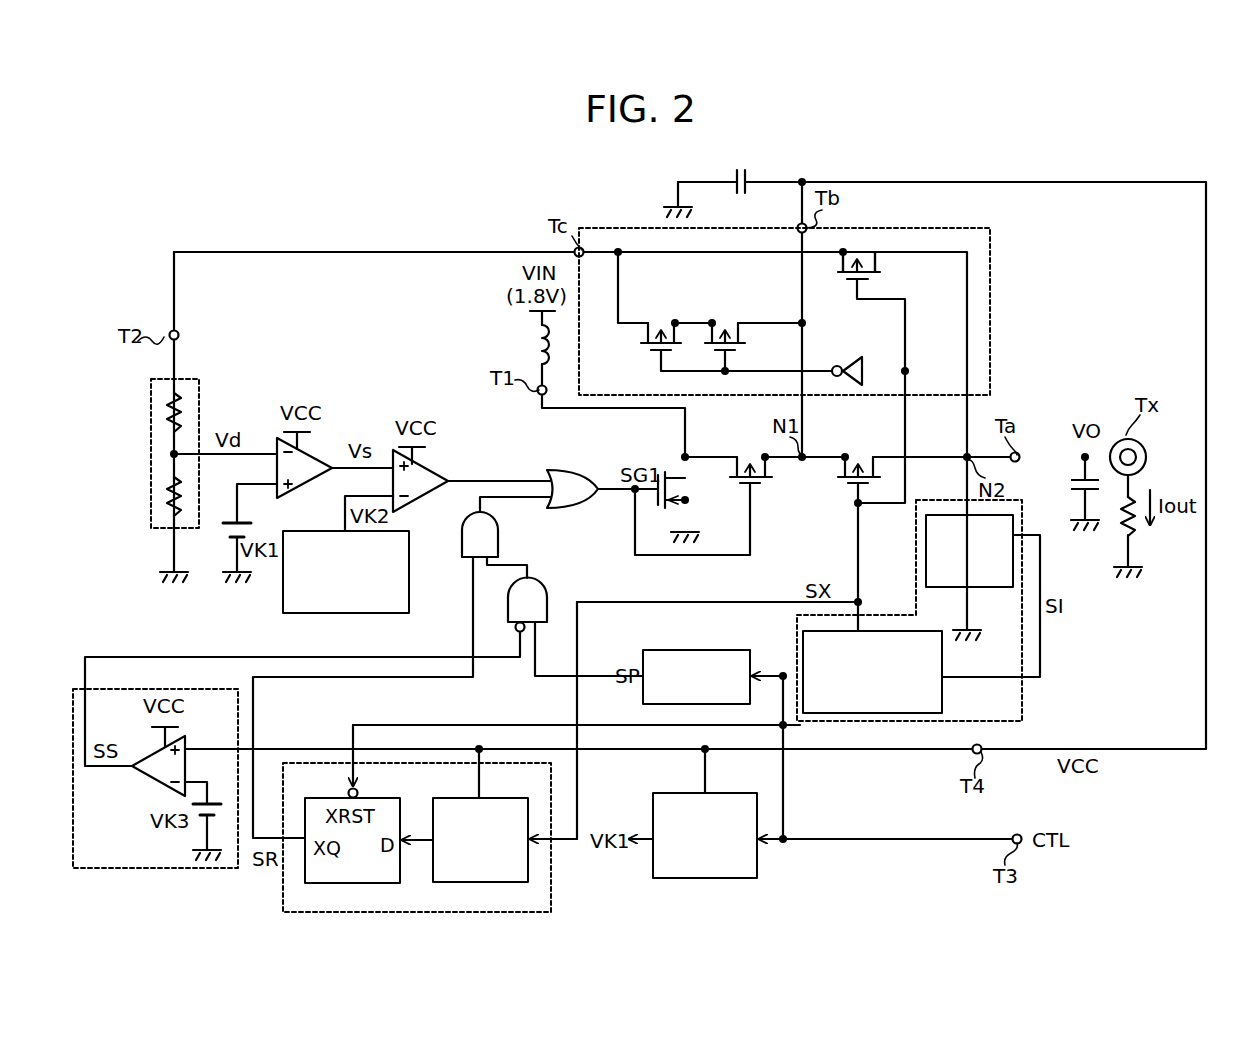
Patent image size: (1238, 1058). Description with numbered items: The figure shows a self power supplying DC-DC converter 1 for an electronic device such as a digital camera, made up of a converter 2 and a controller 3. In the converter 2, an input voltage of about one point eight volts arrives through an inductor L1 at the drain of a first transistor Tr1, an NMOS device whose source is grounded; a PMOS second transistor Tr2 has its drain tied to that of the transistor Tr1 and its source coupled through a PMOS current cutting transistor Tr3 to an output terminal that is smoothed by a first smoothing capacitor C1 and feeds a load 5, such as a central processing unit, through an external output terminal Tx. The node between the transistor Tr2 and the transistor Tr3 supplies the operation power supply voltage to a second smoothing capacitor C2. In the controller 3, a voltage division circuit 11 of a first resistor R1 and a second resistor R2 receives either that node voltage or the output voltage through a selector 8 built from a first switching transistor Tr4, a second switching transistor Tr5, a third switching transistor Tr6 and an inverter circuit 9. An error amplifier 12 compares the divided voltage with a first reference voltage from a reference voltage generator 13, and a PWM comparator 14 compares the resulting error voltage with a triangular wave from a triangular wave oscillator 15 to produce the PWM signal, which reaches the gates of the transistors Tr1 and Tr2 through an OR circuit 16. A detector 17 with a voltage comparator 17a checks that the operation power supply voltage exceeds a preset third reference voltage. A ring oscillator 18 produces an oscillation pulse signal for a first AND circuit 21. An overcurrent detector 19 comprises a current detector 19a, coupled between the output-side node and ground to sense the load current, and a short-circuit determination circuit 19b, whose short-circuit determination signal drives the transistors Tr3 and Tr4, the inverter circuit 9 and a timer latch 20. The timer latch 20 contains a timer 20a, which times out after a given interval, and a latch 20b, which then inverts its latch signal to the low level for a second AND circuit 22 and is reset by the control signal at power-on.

The DC-DC converter 1 is at (320, 214).
The converter 2 is at (714, 450).
The controller 3 is at (378, 393).
The load 5 is at (1134, 492).
The selector 8 is at (991, 299).
The inverter circuit 9 is at (850, 358).
The voltage division circuit 11 is at (150, 439).
The error amplifier 12 is at (306, 458).
The reference voltage generator 13 is at (757, 866).
The PWM comparator 14 is at (424, 474).
The triangular wave oscillator 15 is at (357, 615).
The OR circuit 16 is at (565, 469).
The detector 17 is at (135, 870).
The voltage comparator 17a is at (151, 779).
The ring oscillator 18 is at (738, 650).
The overcurrent detector 19 is at (1023, 702).
The current detector 19a is at (926, 548).
The short-circuit determination circuit 19b is at (943, 698).
The timer latch 20 is at (552, 897).
The timer 20a is at (494, 798).
The latch 20b is at (388, 798).
The first AND circuit 21 is at (548, 598).
The second AND circuit 22 is at (459, 550).
The first transistor Tr1 is at (688, 500).
The second transistor Tr2 is at (760, 485).
The current cutting transistor Tr3 is at (848, 485).
The first switching transistor Tr4 is at (869, 280).
The second switching transistor Tr5 is at (736, 351).
The third switching transistor Tr6 is at (646, 351).
The first resistor R1 is at (184, 402).
The second resistor R2 is at (184, 498).
The inductor L1 is at (539, 346).
The first smoothing capacitor C1 is at (1084, 484).
The second smoothing capacitor C2 is at (741, 168).
The external output terminal Tx is at (1134, 434).